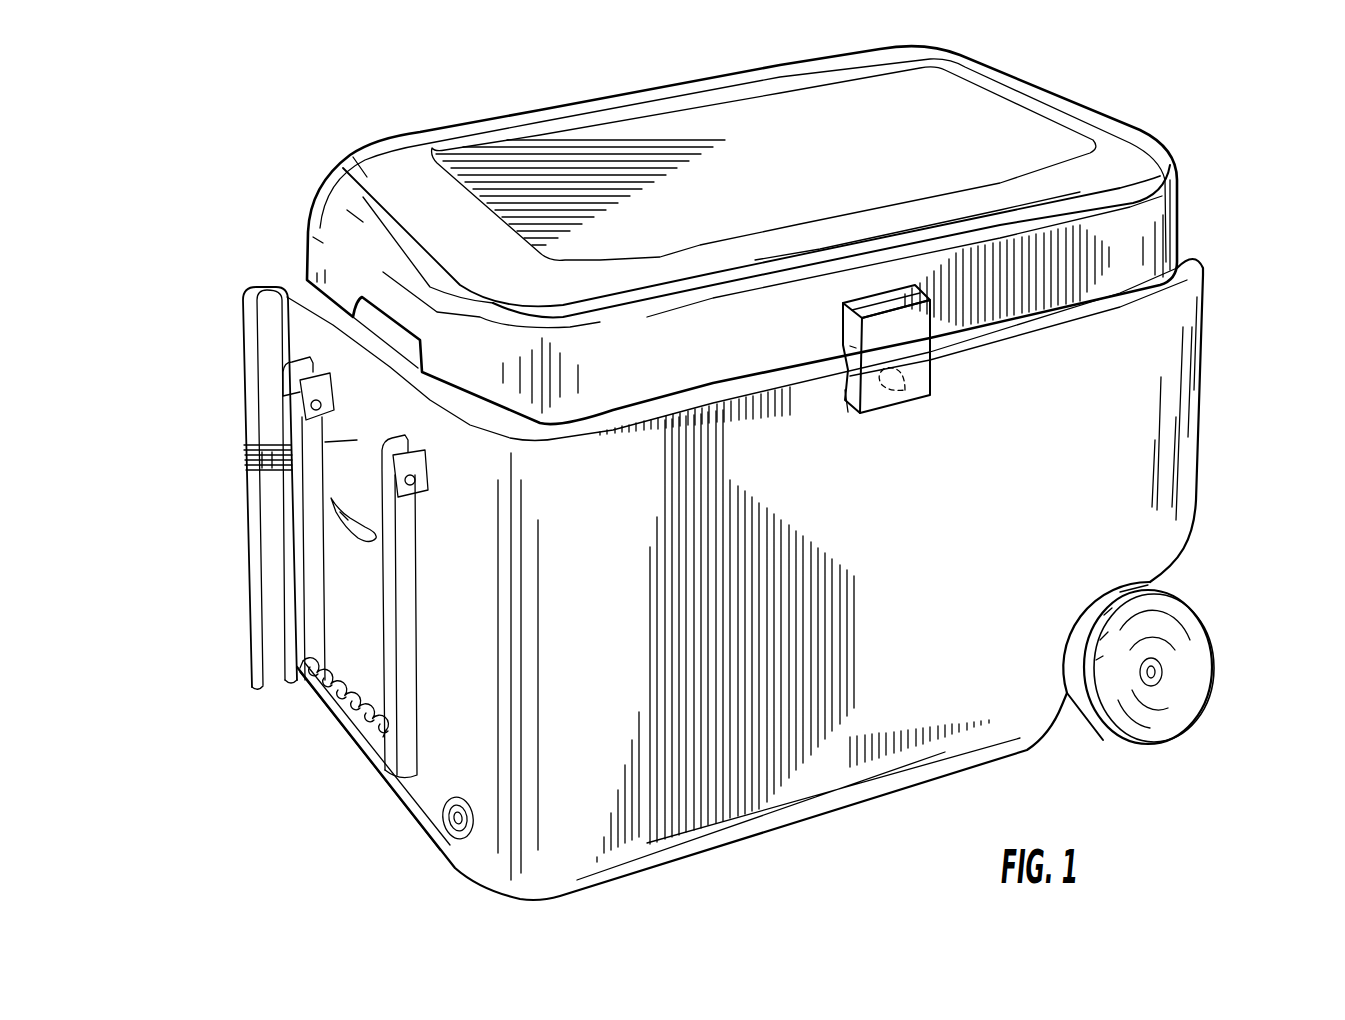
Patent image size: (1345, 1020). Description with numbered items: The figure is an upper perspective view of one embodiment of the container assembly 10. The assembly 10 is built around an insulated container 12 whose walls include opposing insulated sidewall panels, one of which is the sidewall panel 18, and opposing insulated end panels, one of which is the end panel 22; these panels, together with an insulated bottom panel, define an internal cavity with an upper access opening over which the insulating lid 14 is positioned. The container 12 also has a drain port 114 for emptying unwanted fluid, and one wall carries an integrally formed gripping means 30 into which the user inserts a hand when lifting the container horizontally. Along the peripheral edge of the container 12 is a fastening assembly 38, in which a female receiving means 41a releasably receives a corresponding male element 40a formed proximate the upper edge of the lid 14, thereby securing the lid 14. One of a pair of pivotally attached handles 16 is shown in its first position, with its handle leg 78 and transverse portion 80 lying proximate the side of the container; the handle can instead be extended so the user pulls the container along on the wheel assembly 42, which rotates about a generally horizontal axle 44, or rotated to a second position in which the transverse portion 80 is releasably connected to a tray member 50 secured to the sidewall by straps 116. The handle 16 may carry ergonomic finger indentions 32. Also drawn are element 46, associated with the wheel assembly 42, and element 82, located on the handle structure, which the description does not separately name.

The container assembly 10 is at (1215, 112).
The insulated container 12 is at (1250, 317).
The insulating lid 14 is at (743, 183).
The handle 16 is at (336, 745).
The insulated sidewall panel 18 is at (953, 593).
The insulated end panel 22 is at (285, 448).
The gripping means 30 is at (340, 533).
The finger indentions 32 is at (333, 505).
The fastening assembly 38 is at (948, 362).
The male element 40a is at (905, 390).
The female receiving means 41a is at (848, 385).
The wheel assembly 42 is at (1153, 748).
The axle 44 is at (1162, 668).
The wheel 46 is at (1168, 602).
The tray member 50 is at (282, 277).
The handle leg 78 is at (387, 660).
The transverse portion 80 is at (342, 735).
The handle bracket 82 is at (282, 372).
The drain port 114 is at (445, 822).
The straps 116 is at (357, 442).